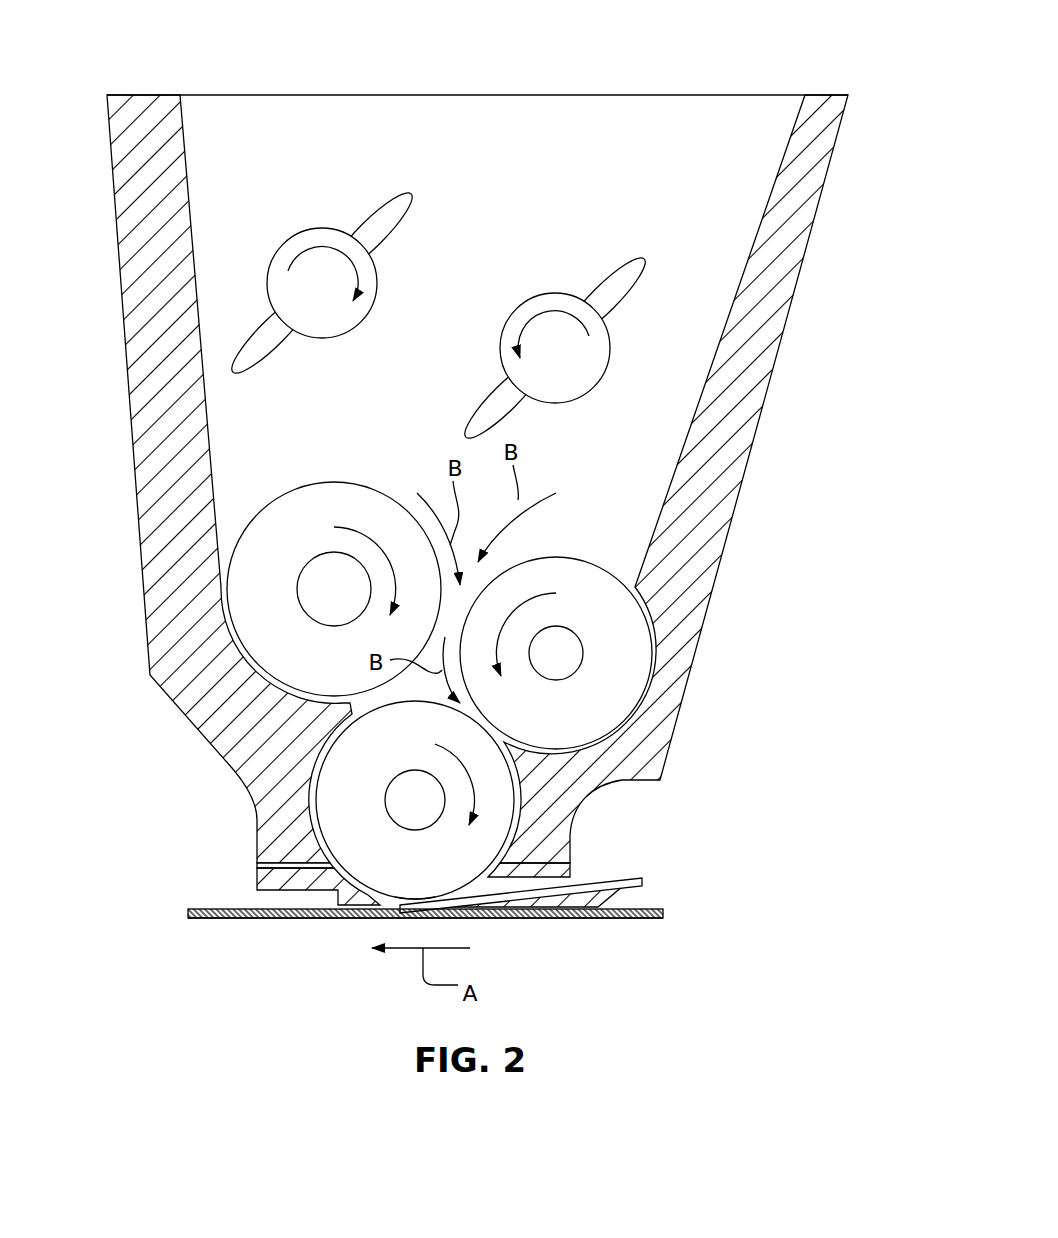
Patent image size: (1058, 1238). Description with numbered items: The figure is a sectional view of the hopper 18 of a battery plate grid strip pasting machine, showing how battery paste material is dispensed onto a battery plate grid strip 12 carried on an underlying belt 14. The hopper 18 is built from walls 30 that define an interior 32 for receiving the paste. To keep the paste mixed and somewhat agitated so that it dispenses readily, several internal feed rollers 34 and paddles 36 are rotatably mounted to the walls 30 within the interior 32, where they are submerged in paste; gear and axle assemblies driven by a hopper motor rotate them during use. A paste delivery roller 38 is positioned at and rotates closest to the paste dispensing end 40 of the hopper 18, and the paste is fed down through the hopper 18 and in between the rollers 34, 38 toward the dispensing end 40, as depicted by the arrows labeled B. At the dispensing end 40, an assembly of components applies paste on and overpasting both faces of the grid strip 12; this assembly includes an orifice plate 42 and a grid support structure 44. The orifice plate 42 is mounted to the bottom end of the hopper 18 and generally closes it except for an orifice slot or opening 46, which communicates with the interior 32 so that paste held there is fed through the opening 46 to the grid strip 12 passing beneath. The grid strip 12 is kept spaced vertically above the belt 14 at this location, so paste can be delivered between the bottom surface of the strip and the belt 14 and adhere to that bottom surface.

The battery plate grid strip 12 is at (220, 903).
The belt 14 is at (220, 921).
The hopper 18 is at (783, 343).
The walls 30 is at (469, 448).
The interior 32 is at (681, 220).
The internal feed rollers 34 is at (337, 483).
The paddles 36 is at (500, 348).
The paste delivery roller 38 is at (343, 727).
The paste dispensing end 40 is at (257, 866).
The orifice plate 42 is at (297, 880).
The grid support structure 44 is at (597, 902).
The orifice slot or opening 46 is at (410, 899).